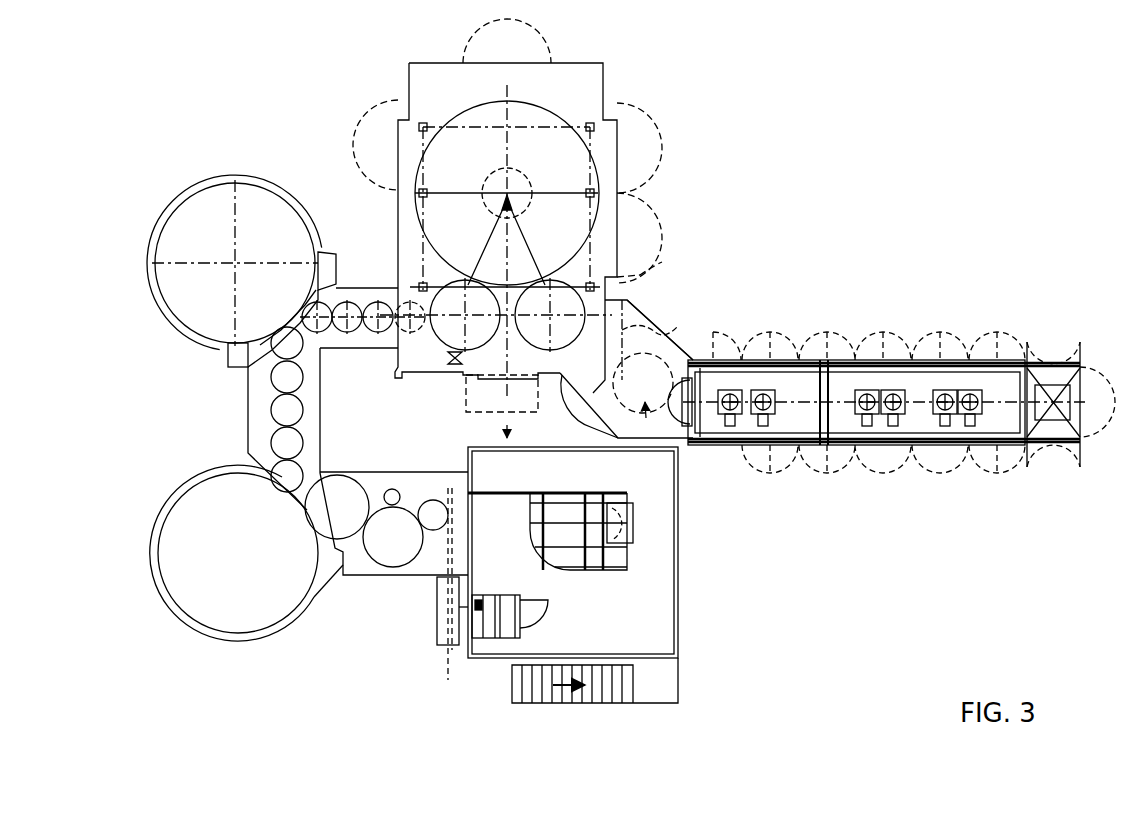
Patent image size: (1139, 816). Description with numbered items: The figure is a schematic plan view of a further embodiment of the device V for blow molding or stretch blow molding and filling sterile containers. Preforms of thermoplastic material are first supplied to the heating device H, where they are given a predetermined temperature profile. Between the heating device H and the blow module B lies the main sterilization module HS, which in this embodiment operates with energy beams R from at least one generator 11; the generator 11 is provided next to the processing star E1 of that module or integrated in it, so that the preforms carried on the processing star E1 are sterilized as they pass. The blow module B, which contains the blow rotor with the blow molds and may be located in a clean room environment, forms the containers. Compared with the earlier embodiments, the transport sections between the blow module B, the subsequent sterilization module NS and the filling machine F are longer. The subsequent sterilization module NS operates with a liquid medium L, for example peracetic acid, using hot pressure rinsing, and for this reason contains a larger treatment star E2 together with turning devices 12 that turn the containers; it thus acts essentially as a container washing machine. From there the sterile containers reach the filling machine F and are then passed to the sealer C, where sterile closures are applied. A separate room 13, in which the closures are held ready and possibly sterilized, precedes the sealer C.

The liquid medium L is at (254, 202).
The subsequent sterilization module NS is at (280, 178).
The treatment star E2 is at (289, 211).
The turning devices 12 is at (337, 265).
The blow module B is at (610, 231).
The generator 11 is at (640, 281).
The main sterilization module HS is at (658, 313).
The processing star E1 is at (640, 326).
The energy beams R is at (643, 396).
The device V is at (758, 268).
The heating device H is at (863, 333).
The filling machine F is at (272, 606).
The sealer C is at (397, 478).
The separate room 13 is at (662, 527).